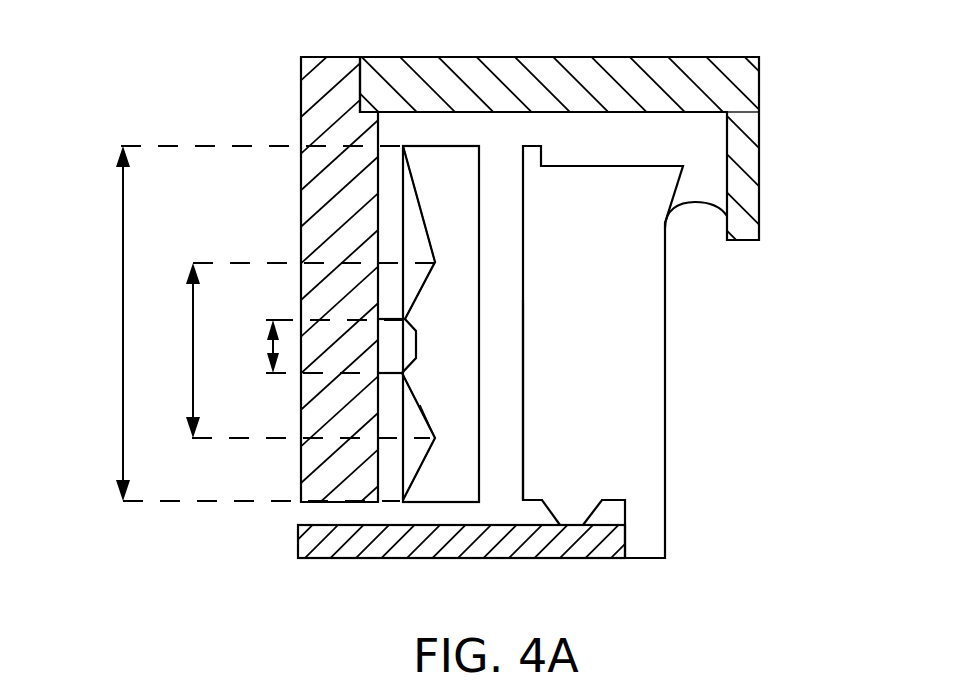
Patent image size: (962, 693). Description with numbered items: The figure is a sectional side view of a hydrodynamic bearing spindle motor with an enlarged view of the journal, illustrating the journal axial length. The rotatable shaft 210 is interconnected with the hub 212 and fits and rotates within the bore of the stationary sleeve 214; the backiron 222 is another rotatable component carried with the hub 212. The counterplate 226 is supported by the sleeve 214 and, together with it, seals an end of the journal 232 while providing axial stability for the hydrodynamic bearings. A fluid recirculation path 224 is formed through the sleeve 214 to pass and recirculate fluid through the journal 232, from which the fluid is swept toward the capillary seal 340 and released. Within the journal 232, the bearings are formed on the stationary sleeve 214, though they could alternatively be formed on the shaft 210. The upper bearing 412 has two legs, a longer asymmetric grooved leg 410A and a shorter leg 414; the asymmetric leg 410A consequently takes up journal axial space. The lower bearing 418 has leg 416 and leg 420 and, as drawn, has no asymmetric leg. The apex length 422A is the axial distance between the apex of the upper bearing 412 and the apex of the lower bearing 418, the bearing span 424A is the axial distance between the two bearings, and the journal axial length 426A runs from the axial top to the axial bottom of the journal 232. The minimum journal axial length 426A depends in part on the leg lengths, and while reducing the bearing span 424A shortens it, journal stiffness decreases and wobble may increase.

The shaft 210 is at (358, 223).
The hub 212 is at (573, 70).
The sleeve 214 is at (473, 340).
The backiron 222 is at (745, 156).
The fluid recirculation path 224 is at (500, 447).
The counterplate 226 is at (373, 542).
The journal 232 is at (390, 177).
The capillary seal 340 is at (693, 203).
The leg 410A is at (442, 175).
The upper bearing 412 is at (424, 245).
The leg 414 is at (417, 297).
The leg 416 is at (413, 387).
The lower bearing 418 is at (424, 416).
The leg 420 is at (418, 472).
The apex length 422A is at (193, 360).
The bearing span 424A is at (273, 347).
The journal axial length 426A is at (123, 255).